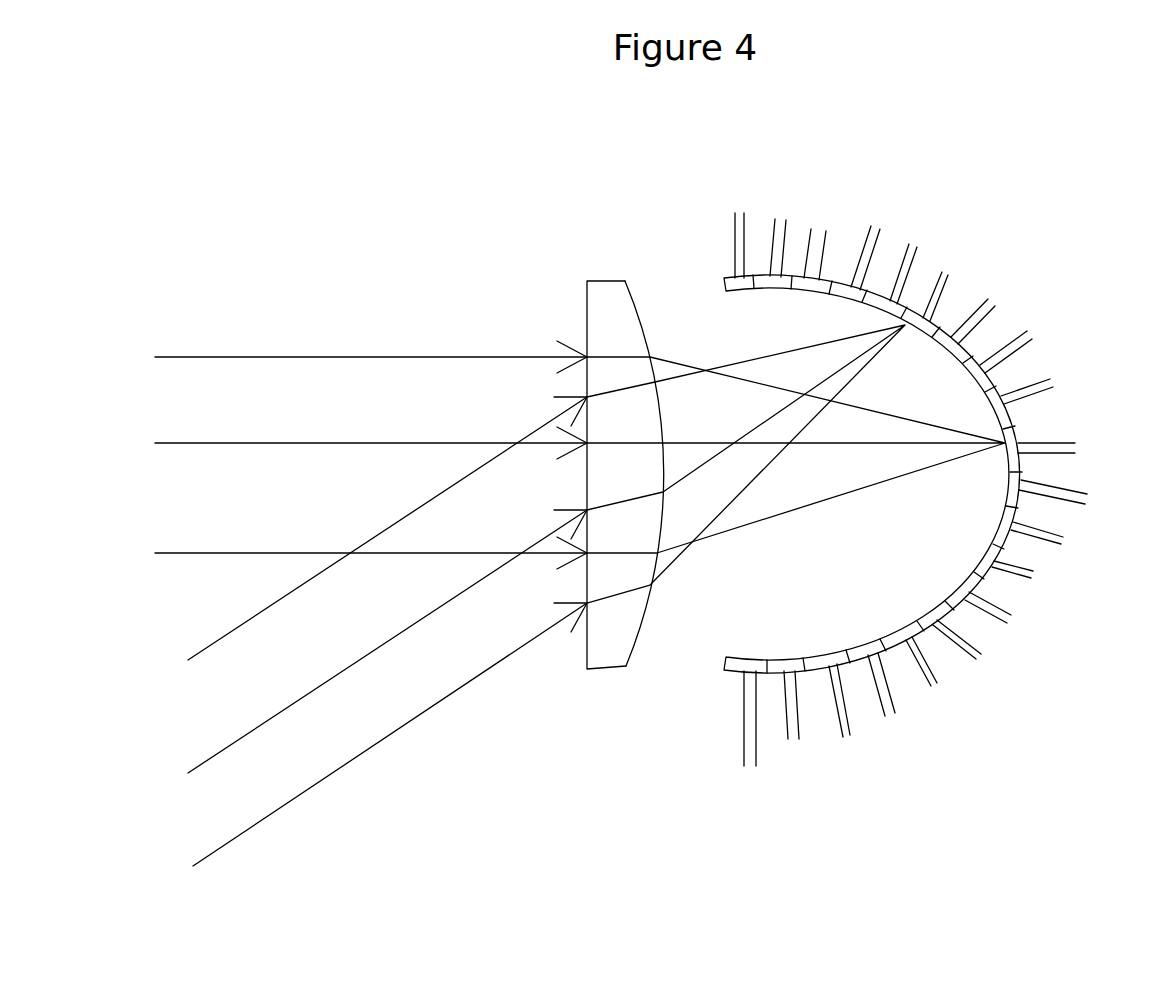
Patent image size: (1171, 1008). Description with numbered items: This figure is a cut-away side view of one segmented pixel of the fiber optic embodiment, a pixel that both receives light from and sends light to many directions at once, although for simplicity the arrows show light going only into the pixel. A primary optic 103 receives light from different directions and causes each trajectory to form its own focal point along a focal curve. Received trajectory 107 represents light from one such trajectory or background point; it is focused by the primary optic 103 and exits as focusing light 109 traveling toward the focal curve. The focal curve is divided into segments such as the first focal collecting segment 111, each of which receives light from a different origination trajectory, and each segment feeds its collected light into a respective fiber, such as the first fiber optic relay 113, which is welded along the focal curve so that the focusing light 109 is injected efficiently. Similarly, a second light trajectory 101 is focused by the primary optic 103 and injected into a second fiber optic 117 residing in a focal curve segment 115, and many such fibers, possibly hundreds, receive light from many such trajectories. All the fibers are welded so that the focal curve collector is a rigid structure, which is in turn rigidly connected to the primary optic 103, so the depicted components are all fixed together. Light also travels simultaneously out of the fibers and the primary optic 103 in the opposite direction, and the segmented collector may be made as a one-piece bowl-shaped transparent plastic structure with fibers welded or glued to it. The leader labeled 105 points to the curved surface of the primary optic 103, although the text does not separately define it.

The second light trajectory 101 is at (332, 357).
The primary optic 103 is at (608, 668).
The lens curved surface 105 is at (661, 366).
The received trajectory 107 is at (378, 747).
The focusing light 109 is at (667, 567).
The first focal collecting segment 111 is at (910, 304).
The first fiber optic relay 113 is at (943, 278).
The focal curve segment 115 is at (1024, 462).
The second fiber optic 117 is at (1048, 442).